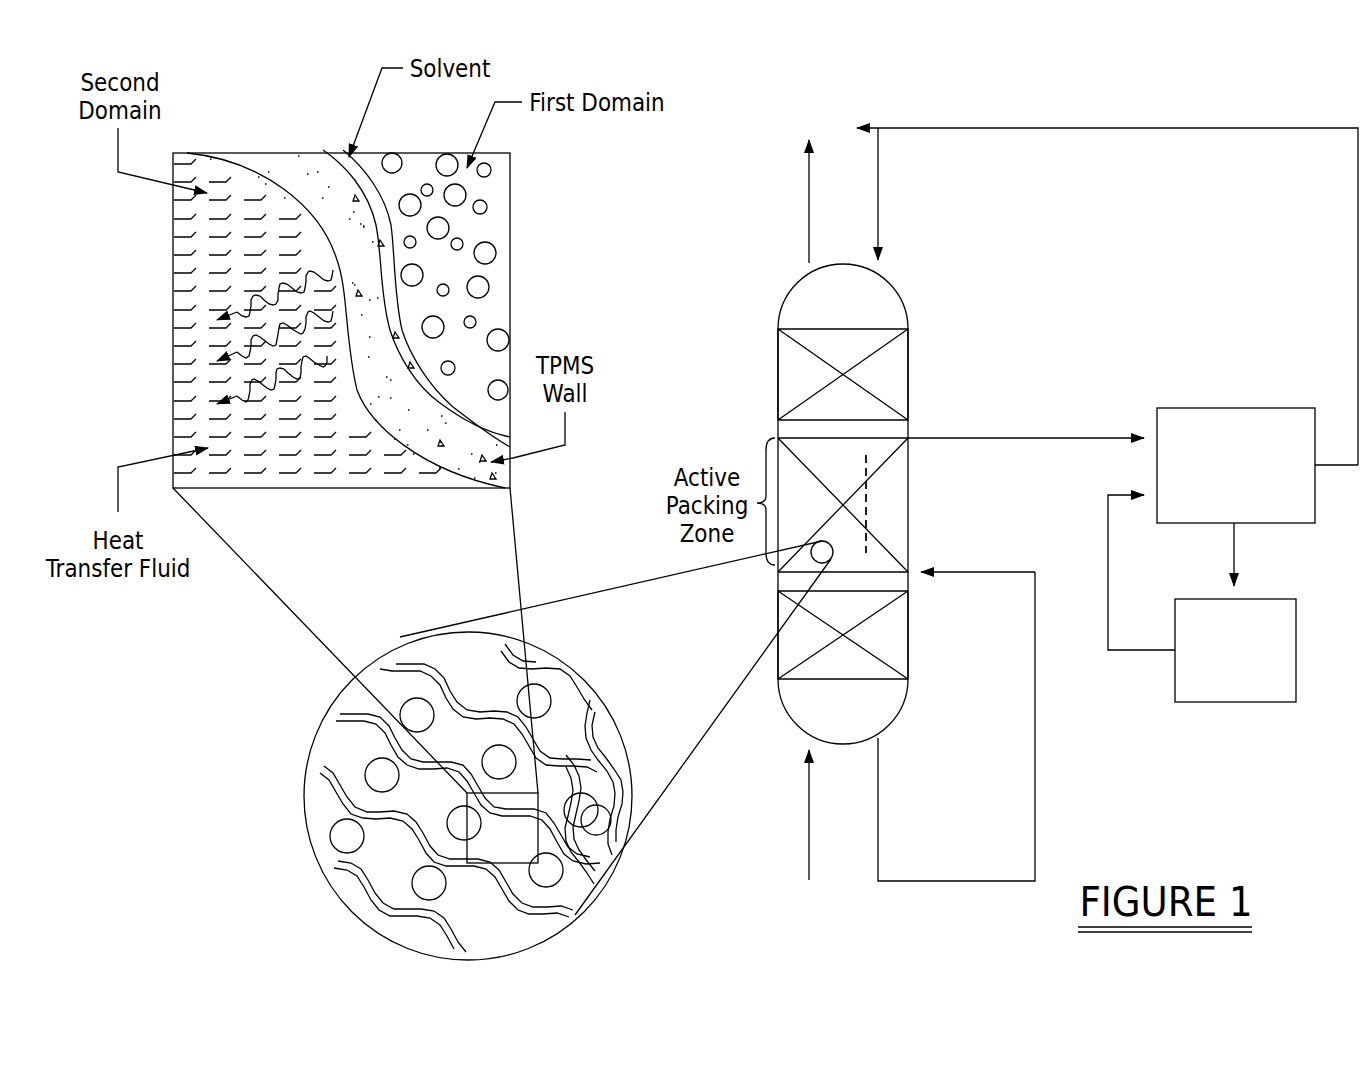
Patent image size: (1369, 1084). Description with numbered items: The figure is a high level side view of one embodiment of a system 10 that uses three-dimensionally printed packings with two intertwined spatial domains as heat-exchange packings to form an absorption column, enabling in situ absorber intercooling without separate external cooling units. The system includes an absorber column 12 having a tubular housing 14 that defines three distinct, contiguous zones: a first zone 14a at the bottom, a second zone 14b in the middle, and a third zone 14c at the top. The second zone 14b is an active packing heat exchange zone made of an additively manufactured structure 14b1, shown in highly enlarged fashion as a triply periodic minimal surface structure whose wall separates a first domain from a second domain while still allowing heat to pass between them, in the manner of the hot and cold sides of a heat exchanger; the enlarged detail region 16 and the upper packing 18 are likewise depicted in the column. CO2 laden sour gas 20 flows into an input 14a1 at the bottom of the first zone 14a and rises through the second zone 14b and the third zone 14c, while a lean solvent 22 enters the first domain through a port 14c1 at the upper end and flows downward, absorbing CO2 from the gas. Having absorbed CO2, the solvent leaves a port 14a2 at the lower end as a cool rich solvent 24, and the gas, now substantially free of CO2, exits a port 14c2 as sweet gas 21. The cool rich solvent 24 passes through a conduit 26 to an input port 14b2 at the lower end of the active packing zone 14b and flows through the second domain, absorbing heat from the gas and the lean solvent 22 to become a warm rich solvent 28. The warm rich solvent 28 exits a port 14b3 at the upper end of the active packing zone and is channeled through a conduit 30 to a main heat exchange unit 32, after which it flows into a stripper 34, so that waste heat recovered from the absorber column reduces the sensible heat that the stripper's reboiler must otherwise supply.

The system 10 is at (1251, 90).
The absorber column 12 is at (764, 312).
The tubular housing 14 is at (777, 430).
The first zone 14a is at (905, 708).
The input 14a1 is at (803, 737).
The port 14a2 is at (910, 575).
The second zone (active packing zone) 14b is at (912, 470).
The additively manufactured structure (active packing structure) 14b1 is at (307, 168).
The input port 14b2 is at (910, 567).
The port 14b3 is at (912, 438).
The third zone 14c is at (905, 298).
The port 14c1 is at (882, 272).
The port 14c2 is at (806, 270).
The detail region of TPMS packing 16 is at (778, 577).
The upper packing 18 is at (776, 357).
The CO2 laden gas (sour gas) 20 is at (808, 866).
The sweet gas 21 is at (808, 165).
The lean solvent 22 is at (880, 165).
The cool rich solvent 24 is at (323, 462).
The conduit 26 is at (1037, 788).
The warm rich solvent 28 is at (882, 520).
The conduit 30 is at (1045, 440).
The main heat exchange unit (main heat exchanger) 32 is at (1262, 408).
The stripper 34 is at (1262, 599).